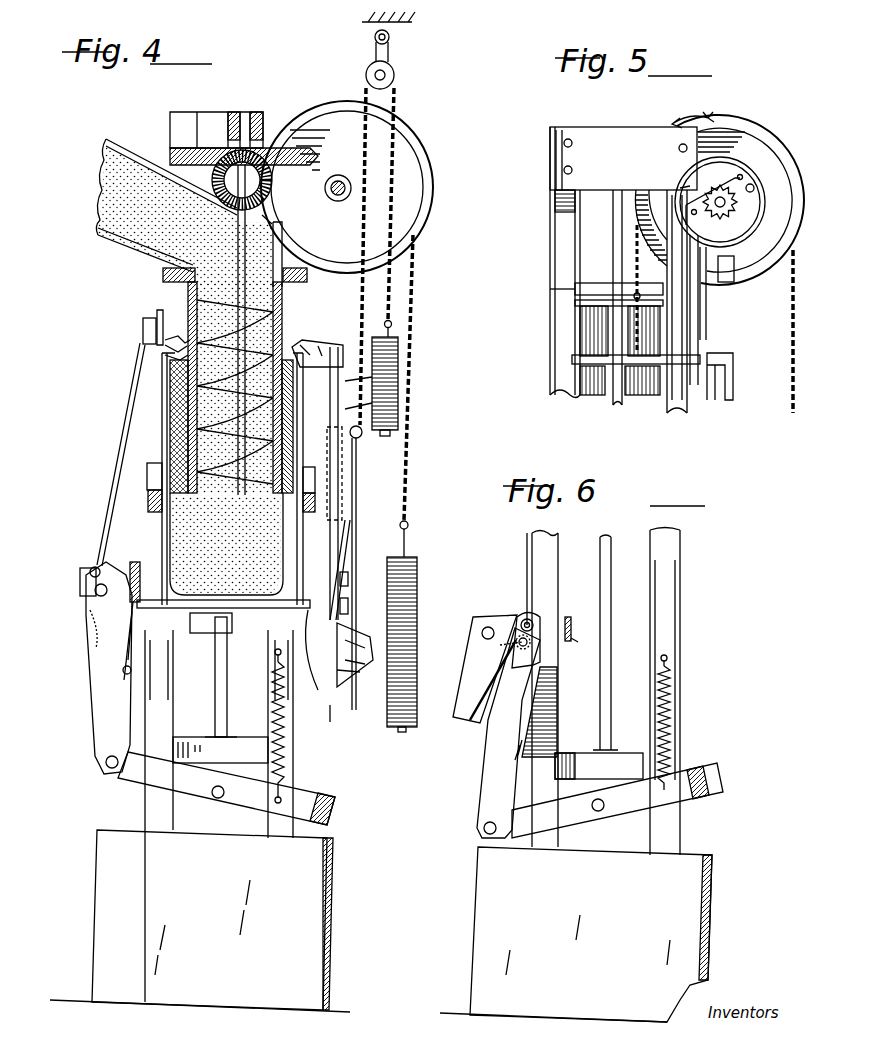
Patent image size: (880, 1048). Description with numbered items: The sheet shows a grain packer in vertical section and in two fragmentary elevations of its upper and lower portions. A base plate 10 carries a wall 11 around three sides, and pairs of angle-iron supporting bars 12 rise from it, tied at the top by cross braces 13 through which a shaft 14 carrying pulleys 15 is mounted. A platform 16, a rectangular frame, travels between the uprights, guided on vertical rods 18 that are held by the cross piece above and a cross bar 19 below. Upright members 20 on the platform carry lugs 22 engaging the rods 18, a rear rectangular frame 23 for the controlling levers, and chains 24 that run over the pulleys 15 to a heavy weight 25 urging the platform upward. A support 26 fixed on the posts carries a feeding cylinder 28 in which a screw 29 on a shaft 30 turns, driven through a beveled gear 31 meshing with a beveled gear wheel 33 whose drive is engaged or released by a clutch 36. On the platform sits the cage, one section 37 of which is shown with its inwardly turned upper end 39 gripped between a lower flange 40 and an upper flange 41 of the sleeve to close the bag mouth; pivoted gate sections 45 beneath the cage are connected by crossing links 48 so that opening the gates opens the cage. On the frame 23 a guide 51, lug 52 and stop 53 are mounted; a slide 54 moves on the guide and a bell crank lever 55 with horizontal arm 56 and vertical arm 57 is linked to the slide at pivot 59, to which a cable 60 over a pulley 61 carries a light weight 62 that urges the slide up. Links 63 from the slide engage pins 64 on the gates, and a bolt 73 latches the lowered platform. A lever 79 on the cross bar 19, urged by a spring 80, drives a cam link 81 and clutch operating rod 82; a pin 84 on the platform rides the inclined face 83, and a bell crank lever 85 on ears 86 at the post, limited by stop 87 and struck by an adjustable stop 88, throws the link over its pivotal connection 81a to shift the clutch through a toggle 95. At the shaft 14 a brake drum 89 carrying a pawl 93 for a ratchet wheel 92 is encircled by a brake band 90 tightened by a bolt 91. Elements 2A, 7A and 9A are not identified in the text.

In FIG. 4, the base plate 10 is at (62, 1000).
In FIG. 6, the base plate 10 is at (450, 1012).
In FIG. 4, the wall 11 is at (100, 892).
In FIG. 6, the wall 11 is at (712, 888).
In FIG. 4, the supporting bars 12 is at (146, 806).
In FIG. 5, the supporting bars 12 is at (560, 252).
In FIG. 6, the supporting bars 12 is at (668, 585).
In FIG. 5, the cross braces 13 is at (604, 128).
In FIG. 4, the shaft 14 is at (388, 208).
In FIG. 5, the shaft 14 is at (725, 203).
In FIG. 4, the pulleys 15 is at (434, 179).
In FIG. 5, the pulleys 15 is at (772, 136).
In FIG. 4, the platform 16 is at (134, 565).
In FIG. 4, the vertical rods 18 is at (216, 705).
In FIG. 5, the vertical rods 18 is at (614, 246).
In FIG. 6, the vertical rods 18 is at (608, 566).
In FIG. 4, the cross bar 19 is at (249, 742).
In FIG. 6, the cross bar 19 is at (621, 755).
In FIG. 5, the upright members 20 is at (626, 398).
In FIG. 5, the lugs 22 is at (572, 360).
In FIG. 4, the rectangular frame 23 is at (306, 352).
In FIG. 5, the rectangular frame 23 is at (708, 366).
In FIG. 5, the chains or cables 24 is at (791, 412).
In FIG. 4, the weight 25 is at (418, 574).
In FIG. 4, the support 26 is at (168, 272).
In FIG. 5, the support 26 is at (552, 289).
In FIG. 4, the feeding cylinder 28 is at (285, 300).
In FIG. 4, the screw or worm 29 is at (200, 290).
In FIG. 4, the shaft 30 is at (263, 222).
In FIG. 4, the beveled gear 31 is at (172, 150).
In FIG. 4, the beveled gear wheel 33 is at (272, 188).
In FIG. 4, the clutch 36 is at (152, 415).
In FIG. 4, the cage section 37 is at (175, 452).
In FIG. 4, the inwardly turned upper end 39 is at (172, 348).
In FIG. 4, the lower flange or shoulder 40 is at (180, 357).
In FIG. 4, the upper flange or shoulder 41 is at (172, 338).
In FIG. 4, the gate sections 45 is at (268, 658).
In FIG. 4, the links 48 is at (148, 498).
In FIG. 4, the guide 51 is at (338, 392).
In FIG. 4, the lug 52 is at (349, 656).
In FIG. 4, the stop 53 is at (348, 580).
In FIG. 4, the slide 54 is at (357, 508).
In FIG. 4, the bell crank lever 55 is at (362, 686).
In FIG. 4, the horizontal arm 56 is at (345, 720).
In FIG. 4, the vertical arm 57 is at (348, 610).
In FIG. 4, the pivot 59 is at (356, 492).
In FIG. 4, the cable 60 is at (398, 106).
In FIG. 4, the pulley 61 is at (396, 70).
In FIG. 4, the weight 62 is at (400, 352).
In FIG. 4, the links 63 is at (322, 545).
In FIG. 4, the pivot pins 64 is at (321, 664).
In FIG. 4, the bolt 73 is at (372, 403).
In FIG. 4, the lever 79 is at (246, 800).
In FIG. 6, the lever 79 is at (570, 816).
In FIG. 4, the spring 80 is at (285, 742).
In FIG. 6, the spring 80 is at (668, 698).
In FIG. 4, the cam link 81 is at (112, 720).
In FIG. 6, the cam link 81 is at (496, 800).
In FIG. 4, the pivotal connection 81a is at (90, 618).
In FIG. 6, the pivotal connection 81a is at (480, 648).
In FIG. 4, the clutch operating rod 82 is at (125, 440).
In FIG. 6, the clutch operating rod 82 is at (530, 541).
In FIG. 4, the inclined face 83 is at (122, 680).
In FIG. 6, the inclined face 83 is at (548, 706).
In FIG. 4, the pin 84 is at (135, 620).
In FIG. 6, the pin 84 is at (520, 756).
In FIG. 4, the bell crank lever 85 is at (232, 625).
In FIG. 6, the bell crank lever 85 is at (462, 727).
In FIG. 6, the ears 86 is at (506, 618).
In FIG. 4, the stop 87 is at (82, 580).
In FIG. 6, the stop 88 is at (577, 642).
In FIG. 5, the brake drum 89 is at (752, 188).
In FIG. 5, the brake band 90 is at (728, 160).
In FIG. 5, the bolt 91 is at (718, 290).
In FIG. 5, the ratchet wheel 92 is at (735, 272).
In FIG. 5, the pawl 93 is at (700, 186).
In FIG. 4, the toggle 95 is at (143, 328).
In FIG. 4, the chain 2A is at (440, 446).
In FIG. 4, the arm 7A is at (372, 377).
In FIG. 4, the plate 9A is at (158, 312).